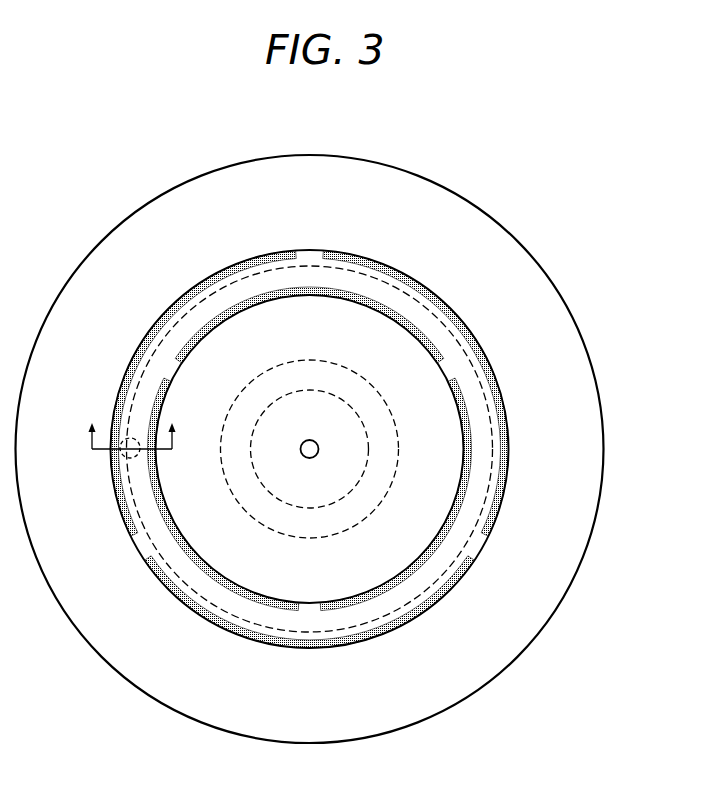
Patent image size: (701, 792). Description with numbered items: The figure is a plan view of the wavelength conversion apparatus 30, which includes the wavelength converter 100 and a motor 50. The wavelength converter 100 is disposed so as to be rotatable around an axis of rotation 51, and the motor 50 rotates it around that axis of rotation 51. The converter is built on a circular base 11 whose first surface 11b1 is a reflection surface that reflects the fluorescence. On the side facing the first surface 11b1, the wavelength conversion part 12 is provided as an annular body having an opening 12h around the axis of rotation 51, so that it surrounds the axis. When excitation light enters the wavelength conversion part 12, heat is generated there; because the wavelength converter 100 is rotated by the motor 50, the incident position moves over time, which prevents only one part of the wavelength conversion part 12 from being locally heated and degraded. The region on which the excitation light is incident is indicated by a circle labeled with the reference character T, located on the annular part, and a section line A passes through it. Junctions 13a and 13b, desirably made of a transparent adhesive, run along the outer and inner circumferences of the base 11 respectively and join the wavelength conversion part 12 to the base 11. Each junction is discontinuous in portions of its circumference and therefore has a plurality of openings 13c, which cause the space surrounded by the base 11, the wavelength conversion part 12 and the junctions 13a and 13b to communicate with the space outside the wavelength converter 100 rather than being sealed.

The wavelength converter 100 is at (630, 185).
The wavelength conversion apparatus 30 is at (160, 180).
The base 11 is at (405, 188).
The first surface 11b1 is at (310, 449).
The wavelength conversion part 12 is at (203, 585).
The opening 12h is at (367, 330).
The junction 13a is at (165, 308).
The junction 13b is at (213, 318).
The openings 13c is at (305, 245).
The motor 50 is at (298, 538).
The axis of rotation 51 is at (314, 447).
The excitation light incident region T is at (122, 442).
The section line A-A' A is at (135, 453).